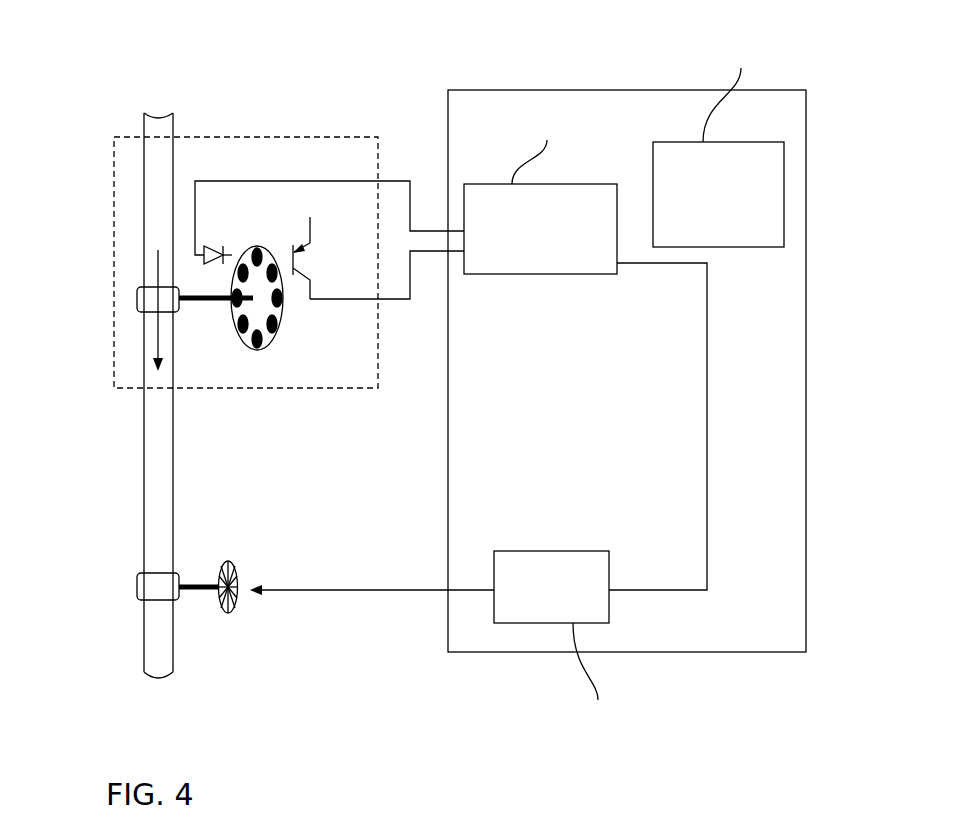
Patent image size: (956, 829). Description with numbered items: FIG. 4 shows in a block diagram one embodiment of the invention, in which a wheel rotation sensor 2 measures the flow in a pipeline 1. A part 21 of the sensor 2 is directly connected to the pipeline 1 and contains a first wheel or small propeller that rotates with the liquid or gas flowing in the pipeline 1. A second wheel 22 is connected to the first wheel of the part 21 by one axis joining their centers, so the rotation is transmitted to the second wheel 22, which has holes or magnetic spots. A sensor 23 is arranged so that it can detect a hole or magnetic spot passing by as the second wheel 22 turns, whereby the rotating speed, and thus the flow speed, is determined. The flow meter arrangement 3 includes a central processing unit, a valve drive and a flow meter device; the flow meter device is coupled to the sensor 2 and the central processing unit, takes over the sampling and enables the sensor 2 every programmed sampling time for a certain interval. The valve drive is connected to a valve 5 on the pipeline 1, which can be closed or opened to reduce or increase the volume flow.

The pipeline 1 is at (144, 432).
The volumetric flow sensor 2 is at (304, 137).
The flow meter arrangement 3 is at (448, 90).
The valve 5 is at (137, 588).
The part of the sensor 21 is at (137, 297).
The second wheel 22 is at (281, 332).
The sensor 23 is at (297, 236).